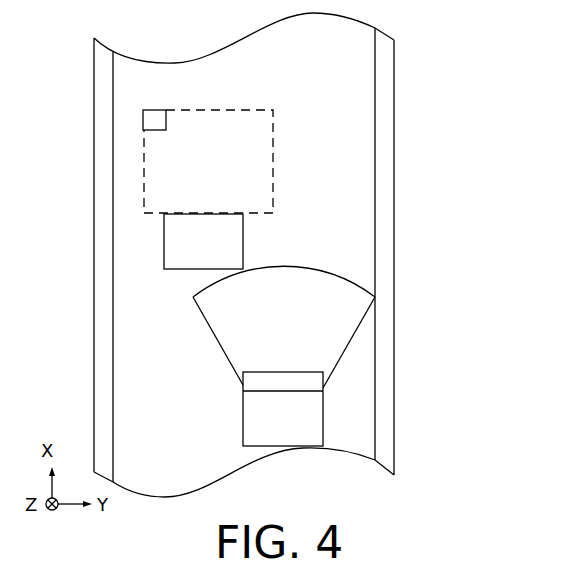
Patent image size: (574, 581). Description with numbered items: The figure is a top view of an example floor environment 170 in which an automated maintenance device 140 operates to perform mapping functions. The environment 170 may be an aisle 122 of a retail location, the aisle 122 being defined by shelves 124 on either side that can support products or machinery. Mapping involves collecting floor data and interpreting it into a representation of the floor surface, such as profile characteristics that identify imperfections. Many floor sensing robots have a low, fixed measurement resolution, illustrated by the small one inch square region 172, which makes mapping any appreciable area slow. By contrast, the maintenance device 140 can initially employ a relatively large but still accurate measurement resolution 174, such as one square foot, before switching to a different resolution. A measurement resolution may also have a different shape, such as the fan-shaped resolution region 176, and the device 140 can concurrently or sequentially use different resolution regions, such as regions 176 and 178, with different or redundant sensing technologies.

The floor environment 170 is at (372, 25).
The shelves 124 is at (402, 95).
The aisle 122 is at (263, 78).
The region 172 is at (158, 103).
The measurement resolution 174 is at (224, 208).
The maintenance device 140 is at (222, 253).
The resolution region 176 is at (284, 327).
The resolution region 178 is at (236, 387).